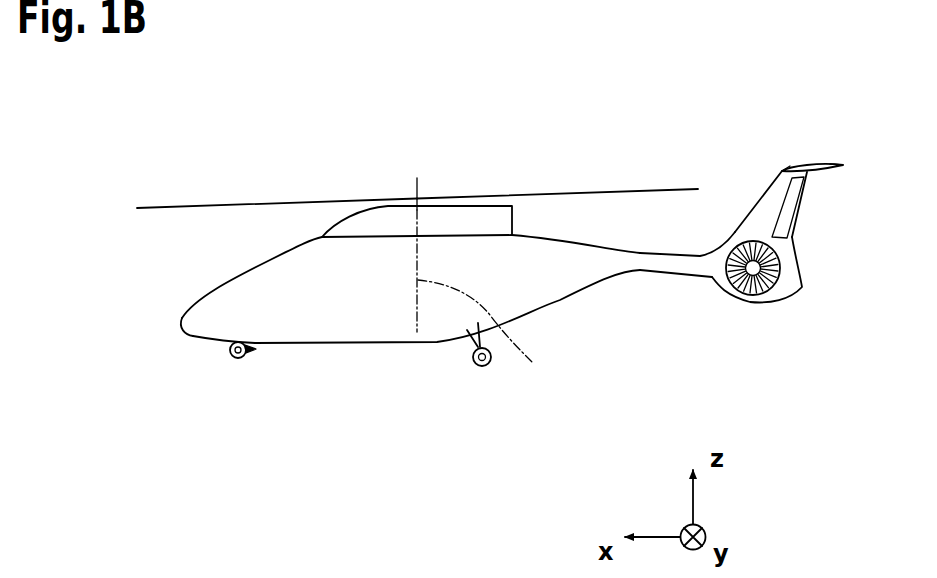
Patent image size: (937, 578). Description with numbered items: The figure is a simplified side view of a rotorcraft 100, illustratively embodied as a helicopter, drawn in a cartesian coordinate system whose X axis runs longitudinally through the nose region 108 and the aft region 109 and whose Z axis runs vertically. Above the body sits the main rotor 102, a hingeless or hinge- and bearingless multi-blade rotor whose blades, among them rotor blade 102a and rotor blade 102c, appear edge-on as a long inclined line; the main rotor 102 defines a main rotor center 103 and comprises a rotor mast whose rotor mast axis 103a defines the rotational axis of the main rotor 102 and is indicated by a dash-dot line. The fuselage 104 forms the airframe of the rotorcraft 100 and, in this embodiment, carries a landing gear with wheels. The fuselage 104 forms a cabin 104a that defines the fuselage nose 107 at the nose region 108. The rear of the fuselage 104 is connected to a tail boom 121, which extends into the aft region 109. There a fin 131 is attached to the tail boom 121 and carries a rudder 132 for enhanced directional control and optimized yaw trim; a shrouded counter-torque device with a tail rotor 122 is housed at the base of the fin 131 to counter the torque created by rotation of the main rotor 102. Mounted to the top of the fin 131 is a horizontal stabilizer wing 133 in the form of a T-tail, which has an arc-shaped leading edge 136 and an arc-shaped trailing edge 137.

The rotorcraft 100 is at (660, 102).
The main rotor 102 is at (385, 195).
The rotor blade 102a is at (200, 207).
The rotor blade 102c is at (585, 190).
The main rotor center 103 is at (422, 195).
The rotor mast axis 103a is at (507, 337).
The fuselage 104 is at (435, 327).
The cabin 104a is at (303, 318).
The fuselage nose 107 is at (178, 320).
The nose region 108 is at (177, 335).
The aft region 109 is at (813, 287).
The tail boom 121 is at (660, 262).
The tail rotor 122 is at (758, 300).
The fin 131 is at (767, 212).
The rudder 132 is at (787, 215).
The stabilizer wing 133 is at (790, 167).
The leading edge 136 is at (780, 167).
The trailing edge 137 is at (840, 167).